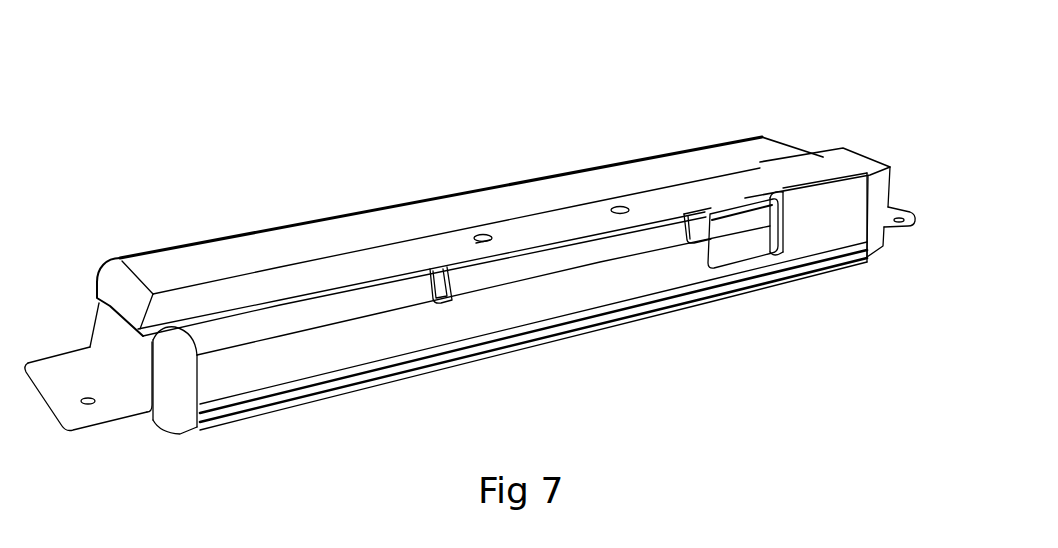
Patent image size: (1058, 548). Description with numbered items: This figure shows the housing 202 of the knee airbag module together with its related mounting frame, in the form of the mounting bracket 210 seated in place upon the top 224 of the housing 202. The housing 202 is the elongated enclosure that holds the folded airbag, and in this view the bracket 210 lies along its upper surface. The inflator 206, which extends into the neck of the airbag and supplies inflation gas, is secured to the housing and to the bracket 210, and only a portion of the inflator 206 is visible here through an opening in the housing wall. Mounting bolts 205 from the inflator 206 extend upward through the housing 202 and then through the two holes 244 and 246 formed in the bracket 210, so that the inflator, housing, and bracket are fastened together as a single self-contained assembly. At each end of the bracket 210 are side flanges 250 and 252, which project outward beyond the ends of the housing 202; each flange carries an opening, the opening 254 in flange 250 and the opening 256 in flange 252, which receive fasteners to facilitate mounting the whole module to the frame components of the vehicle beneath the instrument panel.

The housing 202 is at (157, 251).
The mounting bracket 210 is at (267, 320).
The top 224 is at (530, 200).
The mounting bolts 205 is at (481, 232).
The inflator 206 is at (732, 228).
The hole of the bracket 246 is at (623, 220).
The hole of the bracket 244 is at (483, 246).
The side flange 250 is at (60, 382).
The opening 254 is at (90, 405).
The opening 256 is at (890, 165).
The side flange 252 is at (903, 230).